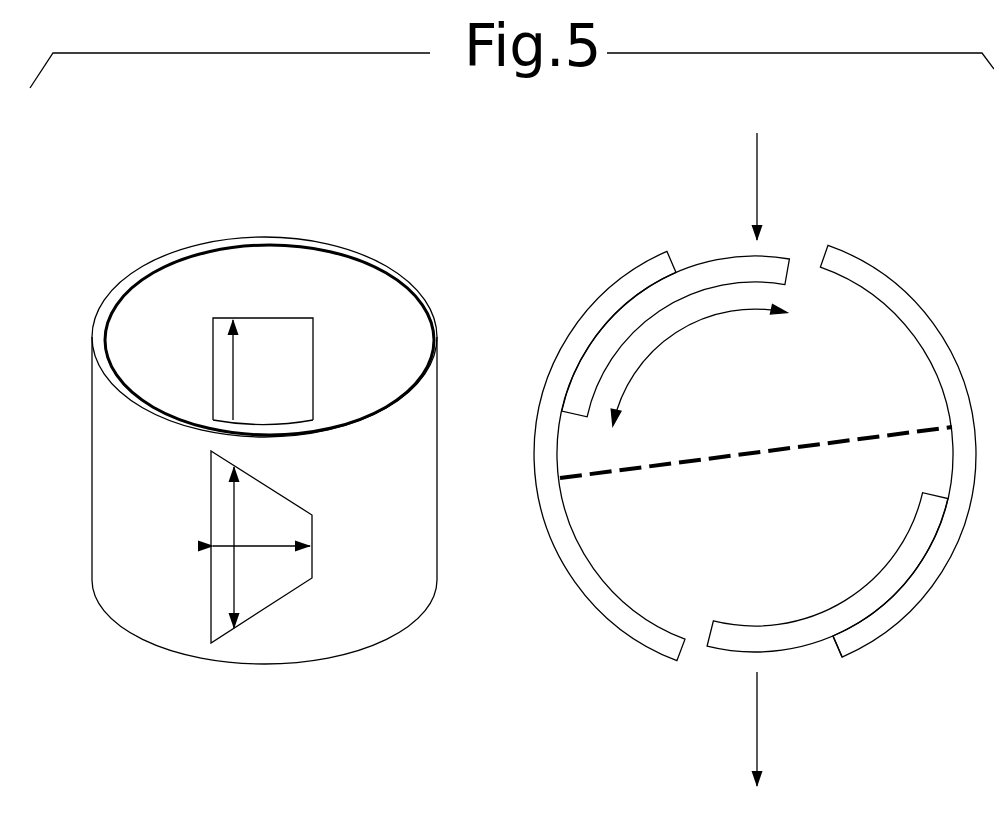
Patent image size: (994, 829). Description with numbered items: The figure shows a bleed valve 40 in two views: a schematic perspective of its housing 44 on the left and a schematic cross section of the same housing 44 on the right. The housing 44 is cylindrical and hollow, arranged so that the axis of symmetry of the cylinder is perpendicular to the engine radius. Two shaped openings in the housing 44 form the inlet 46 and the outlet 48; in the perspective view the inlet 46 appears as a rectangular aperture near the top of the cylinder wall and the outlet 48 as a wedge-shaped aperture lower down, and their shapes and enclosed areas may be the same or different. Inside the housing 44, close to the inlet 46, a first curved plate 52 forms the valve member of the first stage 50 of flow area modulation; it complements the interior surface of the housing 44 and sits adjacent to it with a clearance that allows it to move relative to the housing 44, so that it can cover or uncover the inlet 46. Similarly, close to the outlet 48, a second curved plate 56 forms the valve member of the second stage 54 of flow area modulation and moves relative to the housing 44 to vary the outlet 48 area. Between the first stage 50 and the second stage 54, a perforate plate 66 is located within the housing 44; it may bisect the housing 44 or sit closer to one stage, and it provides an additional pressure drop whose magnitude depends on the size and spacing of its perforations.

The bleed valve 40 is at (126, 254).
The housing 44 is at (108, 432).
The inlet 46 is at (291, 314).
The outlet 48 is at (285, 601).
The first stage 50 is at (823, 221).
The first curved plate 52 is at (721, 263).
The second stage 54 is at (816, 666).
The second curved plate 56 is at (779, 636).
The perforate plate 66 is at (765, 451).